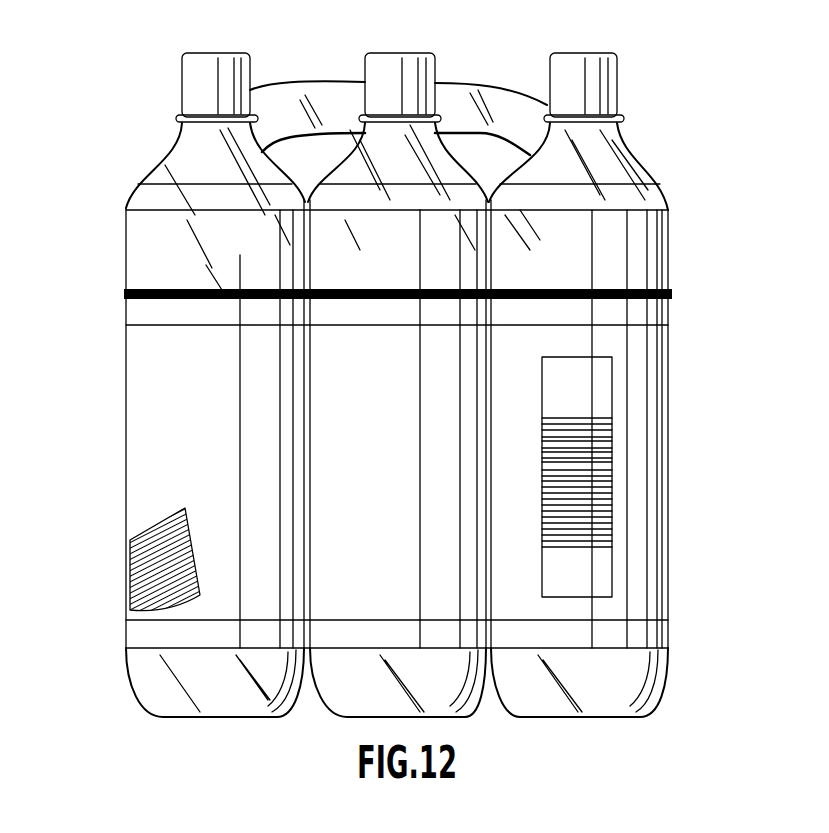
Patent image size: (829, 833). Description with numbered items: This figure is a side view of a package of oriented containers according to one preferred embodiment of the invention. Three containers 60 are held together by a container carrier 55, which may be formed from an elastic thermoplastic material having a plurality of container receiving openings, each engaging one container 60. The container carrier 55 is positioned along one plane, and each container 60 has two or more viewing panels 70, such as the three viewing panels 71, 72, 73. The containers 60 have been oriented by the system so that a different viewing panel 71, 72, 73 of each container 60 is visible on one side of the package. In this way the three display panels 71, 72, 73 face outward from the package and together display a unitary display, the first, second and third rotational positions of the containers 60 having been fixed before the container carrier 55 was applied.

The container carrier 55 is at (462, 97).
The container 60 is at (640, 170).
The viewing panel 70 is at (126, 400).
The first viewing panel 71 is at (157, 495).
The second viewing panel 72 is at (470, 695).
The third viewing panel 73 is at (633, 560).